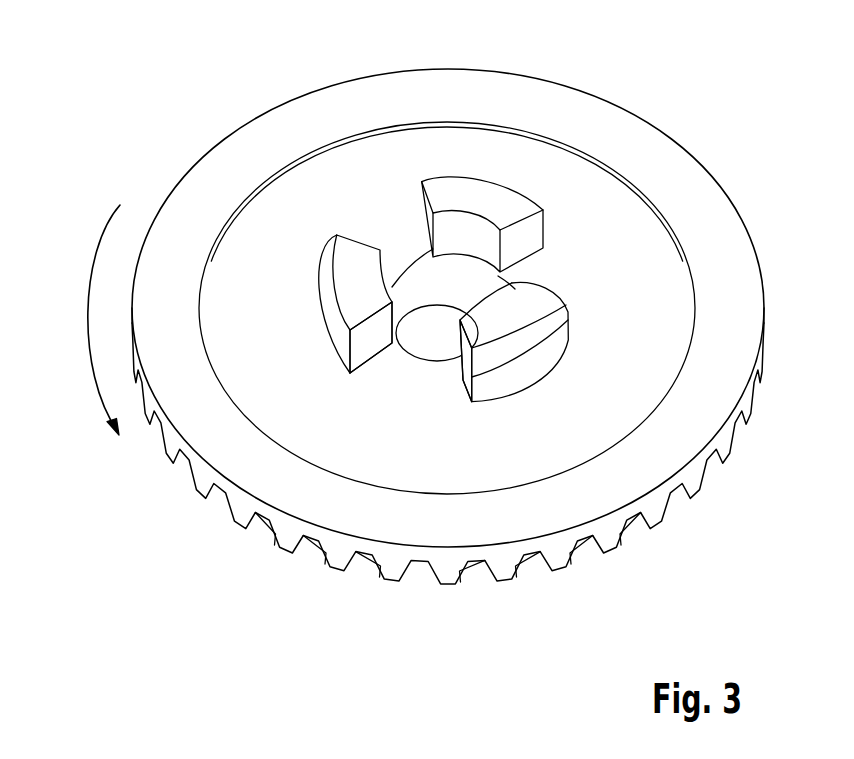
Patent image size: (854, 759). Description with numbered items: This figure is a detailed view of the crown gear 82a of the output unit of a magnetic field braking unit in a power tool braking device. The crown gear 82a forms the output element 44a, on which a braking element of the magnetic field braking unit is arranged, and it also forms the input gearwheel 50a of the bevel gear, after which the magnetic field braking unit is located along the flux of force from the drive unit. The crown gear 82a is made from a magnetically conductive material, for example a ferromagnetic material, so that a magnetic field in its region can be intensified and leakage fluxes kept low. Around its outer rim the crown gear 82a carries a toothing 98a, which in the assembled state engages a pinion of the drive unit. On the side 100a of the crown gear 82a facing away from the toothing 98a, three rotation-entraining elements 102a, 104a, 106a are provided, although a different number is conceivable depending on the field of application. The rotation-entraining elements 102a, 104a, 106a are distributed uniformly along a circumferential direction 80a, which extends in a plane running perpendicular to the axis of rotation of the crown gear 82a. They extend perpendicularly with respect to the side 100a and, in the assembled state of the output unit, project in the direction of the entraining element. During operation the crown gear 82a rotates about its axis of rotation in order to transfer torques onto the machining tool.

The circumferential direction 80a is at (92, 255).
The crown gear 82a is at (231, 168).
The output element 44a is at (446, 142).
The input gearwheel 50a is at (353, 112).
The side 100a is at (534, 153).
The rotation-entraining element 102a is at (470, 198).
The rotation-entraining element 104a is at (510, 320).
The rotation-entraining element 106a is at (370, 338).
The toothing 98a is at (427, 572).